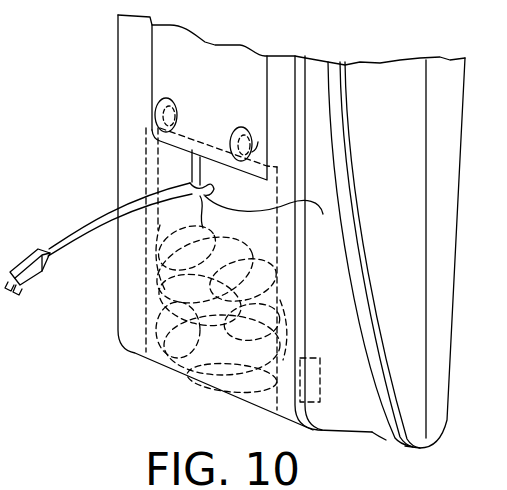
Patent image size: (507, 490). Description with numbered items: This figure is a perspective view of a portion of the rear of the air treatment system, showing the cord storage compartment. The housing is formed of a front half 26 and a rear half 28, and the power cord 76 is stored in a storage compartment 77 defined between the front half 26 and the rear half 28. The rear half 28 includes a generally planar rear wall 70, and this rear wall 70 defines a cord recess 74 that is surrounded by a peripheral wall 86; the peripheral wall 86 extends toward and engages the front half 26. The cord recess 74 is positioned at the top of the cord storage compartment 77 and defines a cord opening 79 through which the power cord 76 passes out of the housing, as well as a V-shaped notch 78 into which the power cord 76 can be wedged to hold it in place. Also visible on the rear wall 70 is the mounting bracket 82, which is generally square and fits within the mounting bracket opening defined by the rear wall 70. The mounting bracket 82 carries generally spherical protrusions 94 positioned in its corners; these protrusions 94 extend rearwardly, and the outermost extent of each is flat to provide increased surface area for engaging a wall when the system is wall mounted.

The front half 26 is at (457, 290).
The rear half 28 is at (390, 440).
The rear wall 70 is at (137, 112).
The cord recess 74 is at (214, 188).
The power cord 76 is at (96, 226).
The storage compartment 77 is at (280, 226).
The V-shaped notch 78 is at (203, 228).
The cord opening 79 is at (270, 218).
The mounting bracket 82 is at (237, 55).
The peripheral wall 86 is at (192, 150).
The spherical protrusions 94 is at (170, 100).